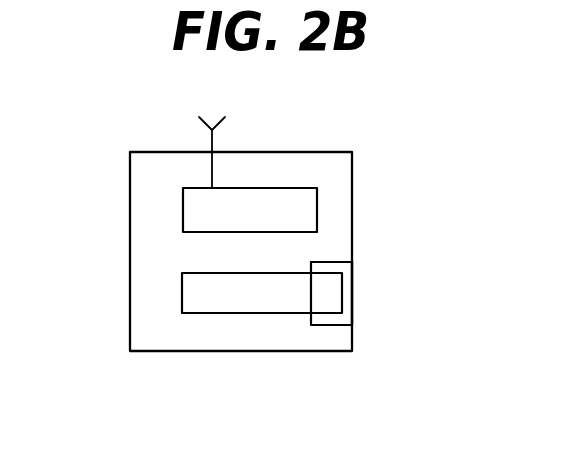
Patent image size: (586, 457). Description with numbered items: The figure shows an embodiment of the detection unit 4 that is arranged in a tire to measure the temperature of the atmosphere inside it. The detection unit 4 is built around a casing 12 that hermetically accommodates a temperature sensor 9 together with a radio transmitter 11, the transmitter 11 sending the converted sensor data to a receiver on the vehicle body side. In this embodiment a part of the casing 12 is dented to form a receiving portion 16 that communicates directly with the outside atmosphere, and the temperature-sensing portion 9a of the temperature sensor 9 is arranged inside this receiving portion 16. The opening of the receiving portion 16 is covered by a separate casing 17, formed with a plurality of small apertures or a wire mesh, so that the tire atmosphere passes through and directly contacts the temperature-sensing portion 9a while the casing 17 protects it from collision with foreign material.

The detection unit 4 is at (327, 143).
The temperature sensor 9 is at (232, 297).
The temperature-sensing portion 9a is at (328, 290).
The radio transmitter 11 is at (183, 217).
The casing 12 is at (352, 220).
The receiving portion 16 is at (330, 265).
The casing 17 is at (352, 297).